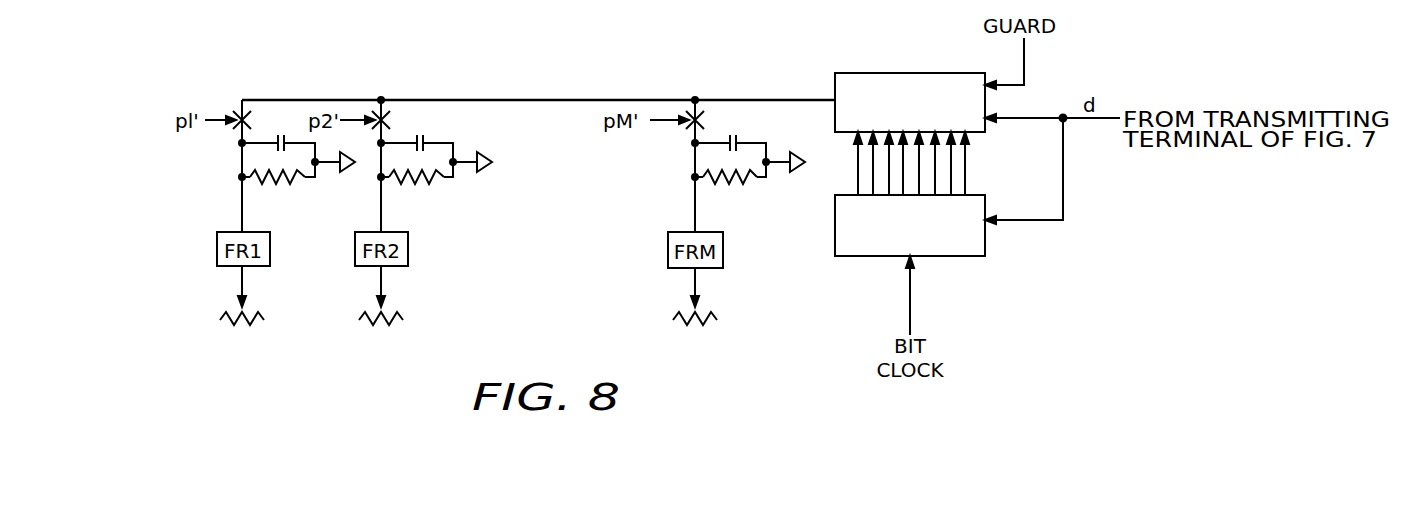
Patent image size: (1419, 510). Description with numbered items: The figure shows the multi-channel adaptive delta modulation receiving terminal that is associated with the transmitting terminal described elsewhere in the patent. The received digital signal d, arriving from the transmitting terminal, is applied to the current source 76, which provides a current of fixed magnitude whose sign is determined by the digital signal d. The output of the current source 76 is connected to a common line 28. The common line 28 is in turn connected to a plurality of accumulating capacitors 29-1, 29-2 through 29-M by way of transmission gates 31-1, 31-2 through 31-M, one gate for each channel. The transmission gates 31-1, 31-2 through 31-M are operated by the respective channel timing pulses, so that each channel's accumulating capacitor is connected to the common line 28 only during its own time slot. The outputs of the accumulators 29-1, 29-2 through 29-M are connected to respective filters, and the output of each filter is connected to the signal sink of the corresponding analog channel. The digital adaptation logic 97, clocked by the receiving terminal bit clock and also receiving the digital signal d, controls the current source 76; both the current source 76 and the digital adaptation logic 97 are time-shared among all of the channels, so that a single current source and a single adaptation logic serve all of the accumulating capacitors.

The common line 28 is at (527, 100).
The accumulating capacitor 29-1 is at (284, 133).
The accumulating capacitor 29-2 is at (425, 132).
The accumulating capacitor 29-M is at (735, 127).
The transmission gate 31-1 is at (257, 117).
The transmission gate 31-2 is at (393, 117).
The transmission gate 31-M is at (708, 118).
The current source 76 is at (872, 82).
The digital adaptation logic 97 is at (976, 200).